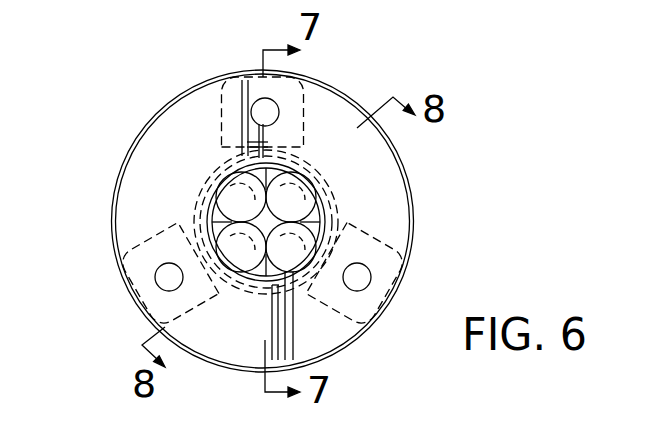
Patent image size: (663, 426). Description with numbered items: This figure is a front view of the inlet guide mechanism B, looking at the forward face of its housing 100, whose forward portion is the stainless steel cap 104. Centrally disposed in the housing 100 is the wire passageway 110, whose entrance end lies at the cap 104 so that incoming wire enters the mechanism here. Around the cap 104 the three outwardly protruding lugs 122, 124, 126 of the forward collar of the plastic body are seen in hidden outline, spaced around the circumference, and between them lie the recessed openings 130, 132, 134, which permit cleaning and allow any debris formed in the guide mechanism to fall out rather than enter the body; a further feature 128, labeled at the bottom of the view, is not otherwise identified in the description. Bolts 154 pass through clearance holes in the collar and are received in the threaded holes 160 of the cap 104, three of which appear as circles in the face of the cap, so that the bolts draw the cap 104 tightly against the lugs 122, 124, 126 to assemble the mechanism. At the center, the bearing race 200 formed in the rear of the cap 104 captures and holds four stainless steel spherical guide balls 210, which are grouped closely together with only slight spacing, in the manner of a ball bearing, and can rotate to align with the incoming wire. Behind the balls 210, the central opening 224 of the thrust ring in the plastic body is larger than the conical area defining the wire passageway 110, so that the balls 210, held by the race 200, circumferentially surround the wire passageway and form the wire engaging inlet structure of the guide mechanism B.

The inlet guide mechanism B is at (119, 68).
The housing 100 is at (184, 67).
The stainless steel cap 104 is at (419, 190).
The wire passageway 110 is at (235, 210).
The lug 122 is at (303, 91).
The lug 124 is at (388, 277).
The lug 126 is at (118, 274).
The key 128 is at (333, 349).
The recessed opening 130 is at (167, 137).
The recessed opening 132 is at (388, 167).
The recessed opening 134 is at (350, 343).
The bolt 154 is at (263, 107).
The threaded hole 160 is at (252, 120).
The bearing race 200 is at (188, 205).
The spherical guide ball 210 is at (243, 197).
The central opening 224 is at (330, 218).